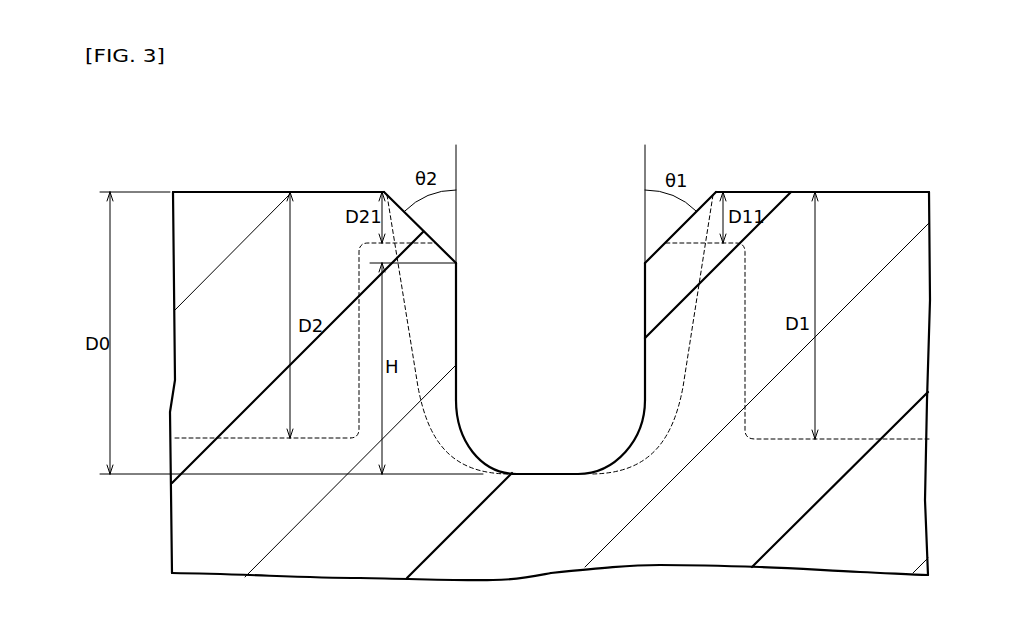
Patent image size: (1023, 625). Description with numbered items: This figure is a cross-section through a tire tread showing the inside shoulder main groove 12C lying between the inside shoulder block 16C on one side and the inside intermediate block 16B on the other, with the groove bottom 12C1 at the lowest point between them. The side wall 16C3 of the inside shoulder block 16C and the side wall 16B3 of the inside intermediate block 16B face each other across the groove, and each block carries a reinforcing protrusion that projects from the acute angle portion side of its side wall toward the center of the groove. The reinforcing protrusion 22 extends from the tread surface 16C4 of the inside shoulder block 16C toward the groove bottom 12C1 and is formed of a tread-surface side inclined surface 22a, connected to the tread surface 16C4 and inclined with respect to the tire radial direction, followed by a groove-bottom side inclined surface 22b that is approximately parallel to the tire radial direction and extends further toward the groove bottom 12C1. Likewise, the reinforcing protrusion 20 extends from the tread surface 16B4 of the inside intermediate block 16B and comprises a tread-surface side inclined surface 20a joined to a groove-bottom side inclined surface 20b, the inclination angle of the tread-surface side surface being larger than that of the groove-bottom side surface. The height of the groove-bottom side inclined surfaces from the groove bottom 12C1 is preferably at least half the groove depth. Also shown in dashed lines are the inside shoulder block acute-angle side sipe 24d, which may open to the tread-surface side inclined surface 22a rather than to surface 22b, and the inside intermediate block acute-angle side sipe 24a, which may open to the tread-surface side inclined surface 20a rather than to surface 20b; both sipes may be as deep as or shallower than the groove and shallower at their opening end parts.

The inside shoulder main groove 12C is at (565, 222).
The groove bottom 12C1 is at (556, 473).
The inside shoulder block 16C is at (195, 227).
The inside intermediate block 16B is at (910, 228).
The tread surface 16C4 is at (268, 192).
The tread surface 16B4 is at (835, 192).
The side wall 16C3 is at (410, 322).
The side wall 16B3 is at (695, 345).
The reinforcing protrusion 22 is at (468, 296).
The tread-surface side inclined surface 22a is at (445, 240).
The groove-bottom side inclined surface 22b is at (457, 300).
The reinforcing protrusion 20 is at (634, 296).
The tread-surface side inclined surface 20a is at (658, 252).
The groove-bottom side inclined surface 20b is at (644, 302).
The inside shoulder block acute-angle side sipe 24d is at (210, 438).
The inside intermediate block acute-angle side sipe 24a is at (896, 439).